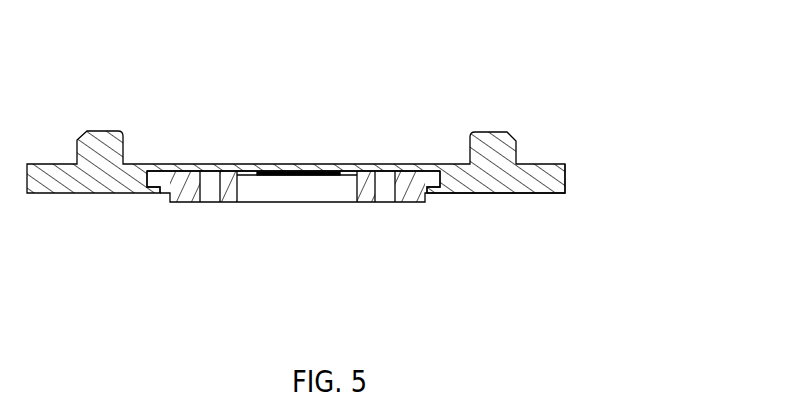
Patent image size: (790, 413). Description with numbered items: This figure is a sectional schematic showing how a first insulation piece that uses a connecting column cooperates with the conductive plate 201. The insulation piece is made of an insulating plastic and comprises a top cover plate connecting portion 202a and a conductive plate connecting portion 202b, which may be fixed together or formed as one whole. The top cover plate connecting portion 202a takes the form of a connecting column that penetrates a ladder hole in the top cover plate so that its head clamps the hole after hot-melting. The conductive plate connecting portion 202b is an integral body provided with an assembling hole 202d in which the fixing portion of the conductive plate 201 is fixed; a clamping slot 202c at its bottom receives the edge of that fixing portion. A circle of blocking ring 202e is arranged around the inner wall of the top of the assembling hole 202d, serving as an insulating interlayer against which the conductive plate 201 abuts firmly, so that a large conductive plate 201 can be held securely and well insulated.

The conductive plate 201 is at (257, 175).
The top cover plate connecting portion 202a is at (495, 142).
The conductive plate connecting portion 202b is at (518, 185).
The clamping slot 202c is at (150, 193).
The assembling hole 202d is at (237, 167).
The blocking ring 202e is at (440, 182).